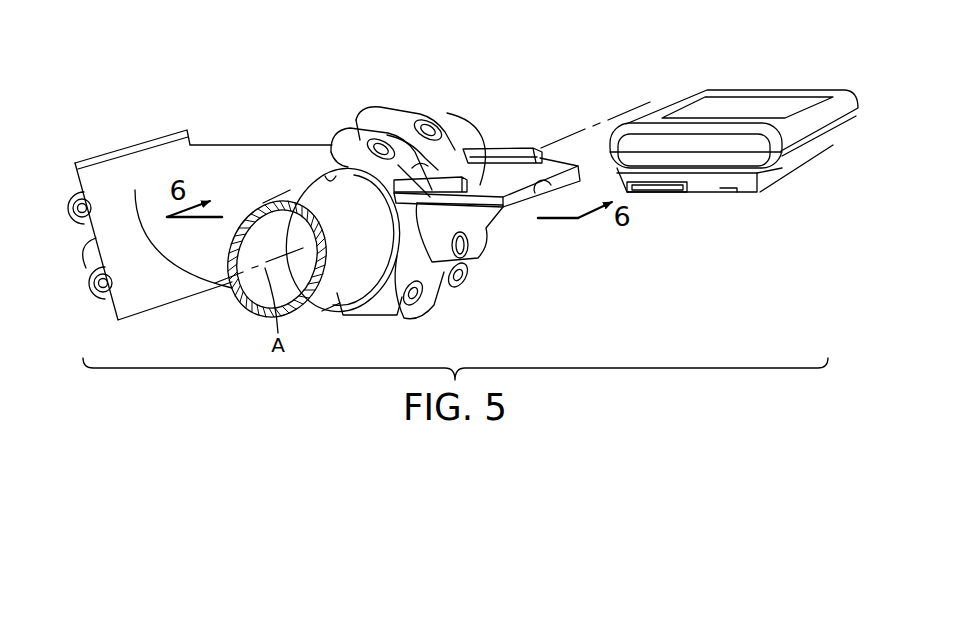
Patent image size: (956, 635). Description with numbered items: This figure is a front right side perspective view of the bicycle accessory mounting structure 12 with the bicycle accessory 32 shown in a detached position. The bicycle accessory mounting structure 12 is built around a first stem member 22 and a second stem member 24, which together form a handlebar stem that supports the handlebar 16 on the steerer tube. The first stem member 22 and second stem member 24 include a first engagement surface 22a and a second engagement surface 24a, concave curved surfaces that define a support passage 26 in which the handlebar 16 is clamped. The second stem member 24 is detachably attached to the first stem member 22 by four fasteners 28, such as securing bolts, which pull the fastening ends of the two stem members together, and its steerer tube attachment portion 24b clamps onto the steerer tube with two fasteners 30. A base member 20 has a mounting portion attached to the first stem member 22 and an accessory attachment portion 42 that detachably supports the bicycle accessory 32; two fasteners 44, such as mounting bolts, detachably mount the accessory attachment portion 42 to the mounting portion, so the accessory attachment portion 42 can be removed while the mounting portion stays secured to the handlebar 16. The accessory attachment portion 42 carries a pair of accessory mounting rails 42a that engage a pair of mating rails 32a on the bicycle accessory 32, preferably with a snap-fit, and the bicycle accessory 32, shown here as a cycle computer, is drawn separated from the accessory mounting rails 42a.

The bicycle accessory mounting structure 12 is at (562, 55).
The handlebar 16 is at (277, 190).
The base member 20 is at (494, 246).
The first stem member 22 is at (405, 106).
The first engagement surface 22a is at (370, 200).
The second stem member 24 is at (208, 143).
The second engagement surface 24a is at (336, 140).
The steerer tube attachment portion 24b is at (82, 245).
The support passage 26 is at (343, 318).
The fasteners 28 is at (452, 160).
The fasteners 30 is at (73, 208).
The bicycle accessory 32 is at (787, 90).
The mating rails 32a is at (658, 192).
The accessory attachment portion 42 is at (460, 221).
The accessory mounting rails 42a is at (518, 150).
The fasteners 44 is at (468, 248).